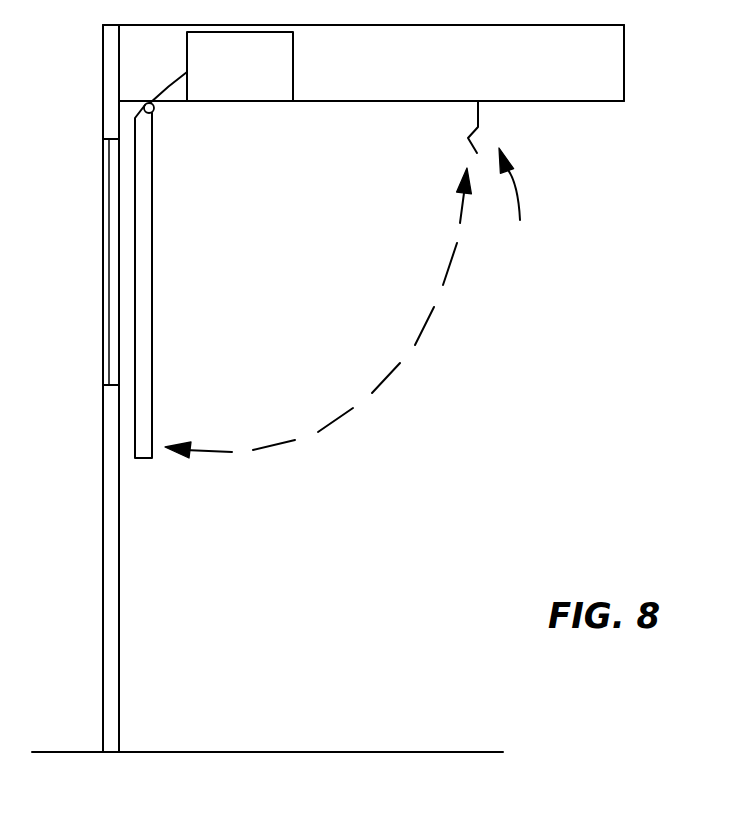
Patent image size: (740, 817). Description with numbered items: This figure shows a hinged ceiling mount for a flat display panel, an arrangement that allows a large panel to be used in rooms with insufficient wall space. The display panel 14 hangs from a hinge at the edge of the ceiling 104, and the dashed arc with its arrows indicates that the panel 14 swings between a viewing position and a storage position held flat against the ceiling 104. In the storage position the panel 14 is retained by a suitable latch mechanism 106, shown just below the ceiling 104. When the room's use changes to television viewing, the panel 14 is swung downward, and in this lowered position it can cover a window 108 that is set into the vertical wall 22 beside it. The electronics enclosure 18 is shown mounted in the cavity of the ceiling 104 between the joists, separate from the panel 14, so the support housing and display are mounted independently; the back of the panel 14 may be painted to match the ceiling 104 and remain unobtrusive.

The pivoting rail / gate arm 14 is at (146, 308).
The housing / control box 18 is at (228, 76).
The upright post 22 is at (103, 65).
The ceiling 104 is at (498, 77).
The latch mechanism 106 is at (522, 202).
The window 108 is at (102, 208).